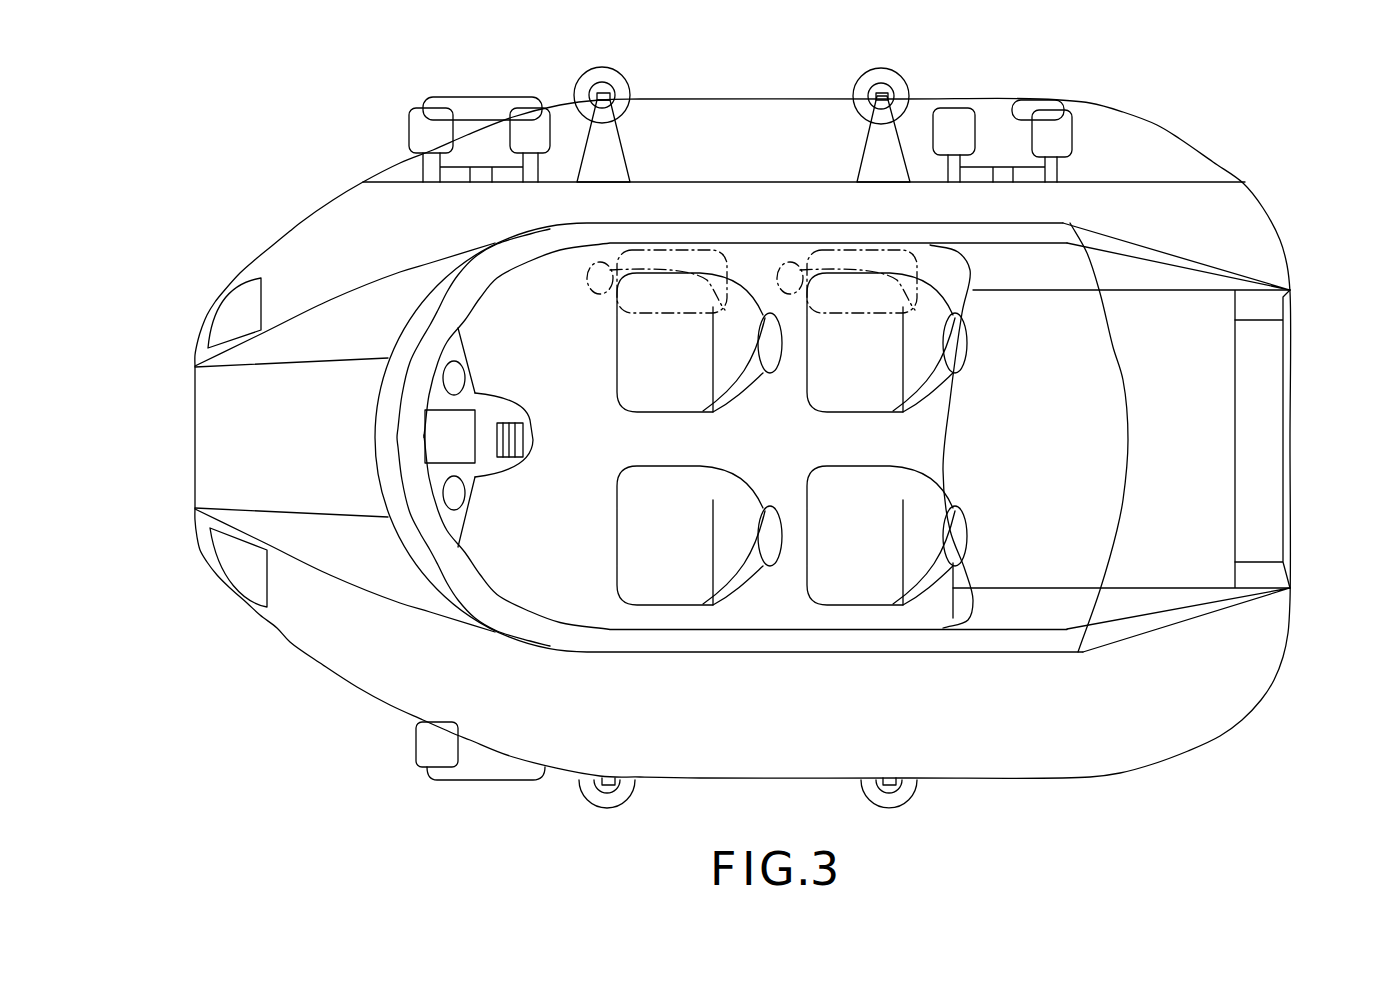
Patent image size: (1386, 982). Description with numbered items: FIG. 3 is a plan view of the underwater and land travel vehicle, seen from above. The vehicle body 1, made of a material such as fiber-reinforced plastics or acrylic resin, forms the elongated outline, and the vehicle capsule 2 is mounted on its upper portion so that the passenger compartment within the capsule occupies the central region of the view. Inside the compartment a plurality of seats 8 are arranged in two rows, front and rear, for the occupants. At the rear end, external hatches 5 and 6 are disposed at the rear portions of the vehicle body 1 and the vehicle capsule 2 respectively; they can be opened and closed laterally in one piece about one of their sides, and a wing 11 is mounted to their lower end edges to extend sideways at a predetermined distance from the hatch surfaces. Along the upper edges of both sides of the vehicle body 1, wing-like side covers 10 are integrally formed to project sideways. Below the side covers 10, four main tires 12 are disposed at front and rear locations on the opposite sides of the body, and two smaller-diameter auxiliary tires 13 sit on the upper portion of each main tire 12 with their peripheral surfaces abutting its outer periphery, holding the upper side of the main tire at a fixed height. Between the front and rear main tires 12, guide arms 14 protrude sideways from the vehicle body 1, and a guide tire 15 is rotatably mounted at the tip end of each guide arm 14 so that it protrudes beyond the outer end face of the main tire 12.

The vehicle body 1 is at (212, 437).
The vehicle capsule 2 is at (733, 237).
The external hatch 5 is at (1218, 377).
The external hatch 6 is at (1077, 553).
The seat 8 is at (627, 352).
The side cover 10 is at (700, 108).
The wing 11 is at (1270, 457).
The main tire 12 is at (480, 110).
The auxiliary tire 13 is at (537, 127).
The guide arm 14 is at (867, 153).
The guide tire 15 is at (883, 77).